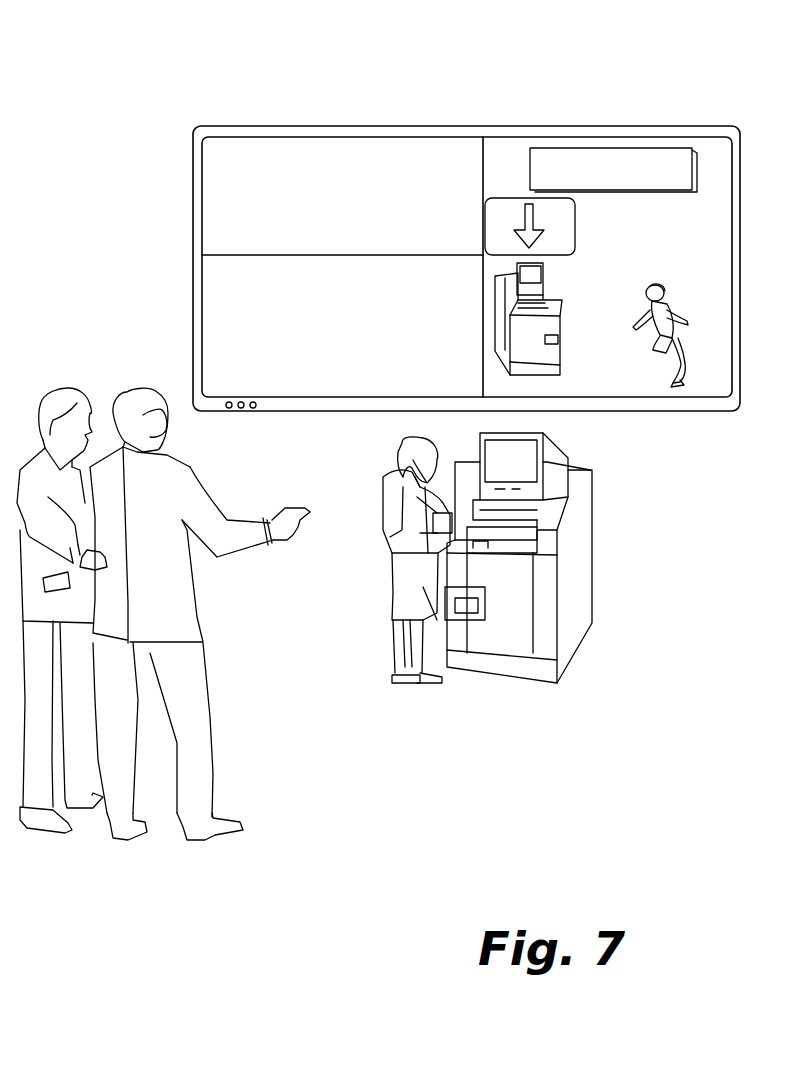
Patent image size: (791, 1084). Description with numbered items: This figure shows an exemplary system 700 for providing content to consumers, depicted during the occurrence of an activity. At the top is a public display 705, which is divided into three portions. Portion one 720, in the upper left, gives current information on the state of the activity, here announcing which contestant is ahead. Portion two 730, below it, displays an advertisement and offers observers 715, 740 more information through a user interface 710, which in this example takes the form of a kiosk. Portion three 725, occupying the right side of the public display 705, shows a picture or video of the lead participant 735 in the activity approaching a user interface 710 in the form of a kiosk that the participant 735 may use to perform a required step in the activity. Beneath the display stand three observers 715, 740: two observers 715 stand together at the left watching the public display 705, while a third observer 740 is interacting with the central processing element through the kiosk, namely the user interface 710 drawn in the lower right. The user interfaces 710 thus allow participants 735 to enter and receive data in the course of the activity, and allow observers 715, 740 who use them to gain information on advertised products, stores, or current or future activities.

The system 700 is at (162, 82).
The public display 705 is at (213, 132).
The user interface 710 is at (562, 360).
The observers 715 is at (65, 847).
The portion one 720 is at (348, 157).
The portion three 725 is at (712, 383).
The portion two 730 is at (210, 267).
The participant 735 is at (687, 375).
The observer 740 is at (387, 667).